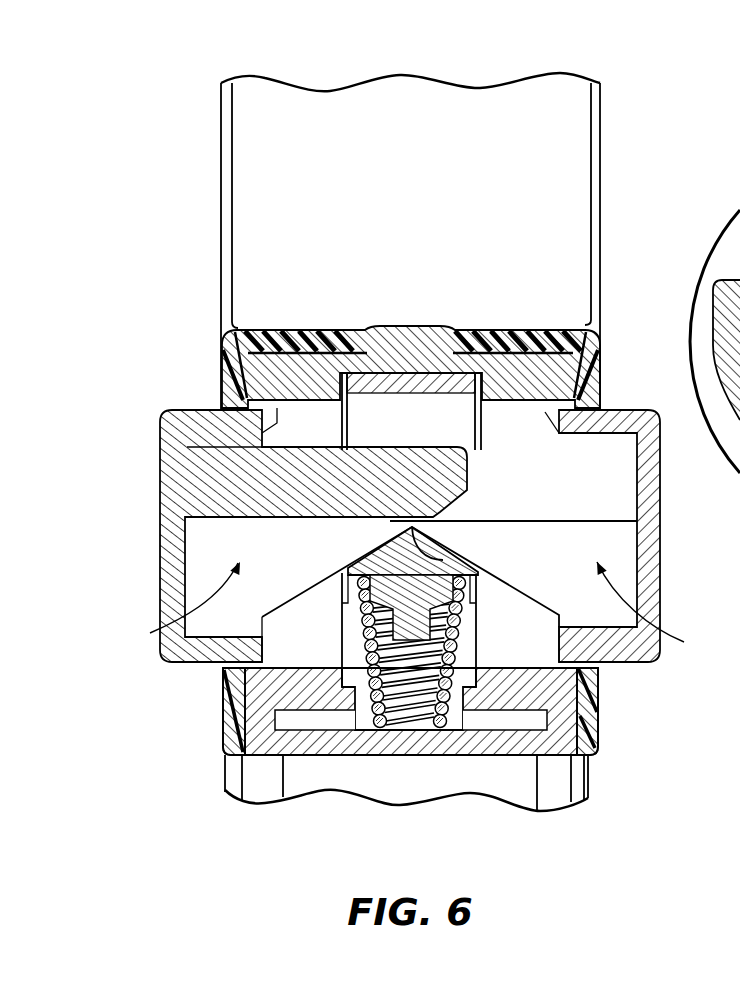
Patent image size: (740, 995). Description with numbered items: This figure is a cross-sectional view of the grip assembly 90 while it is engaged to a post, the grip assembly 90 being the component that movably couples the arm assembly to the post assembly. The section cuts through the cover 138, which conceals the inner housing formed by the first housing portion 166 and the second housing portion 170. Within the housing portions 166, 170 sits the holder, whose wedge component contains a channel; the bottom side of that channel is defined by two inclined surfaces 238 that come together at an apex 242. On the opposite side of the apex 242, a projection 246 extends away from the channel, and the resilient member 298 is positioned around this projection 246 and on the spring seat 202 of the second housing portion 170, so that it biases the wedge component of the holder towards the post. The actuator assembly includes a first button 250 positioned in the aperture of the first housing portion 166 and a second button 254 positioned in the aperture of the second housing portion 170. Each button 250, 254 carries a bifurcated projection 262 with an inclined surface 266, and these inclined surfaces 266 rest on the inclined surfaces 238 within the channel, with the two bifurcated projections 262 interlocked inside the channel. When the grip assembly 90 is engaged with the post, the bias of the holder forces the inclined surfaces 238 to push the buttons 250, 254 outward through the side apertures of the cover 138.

The grip assembly 90 is at (204, 156).
The cover 138 is at (592, 362).
The first button 250 is at (180, 545).
The second button 254 is at (645, 545).
The inclined surfaces 238 is at (366, 557).
The apex 242 is at (428, 541).
The bifurcated projection 262 is at (417, 613).
The inclined surface 266 is at (297, 605).
The first housing portion 166 is at (268, 740).
The second housing portion 170 is at (560, 717).
The resilient member 298 is at (372, 716).
The spring seat 202 is at (412, 640).
The projection 246 is at (452, 718).